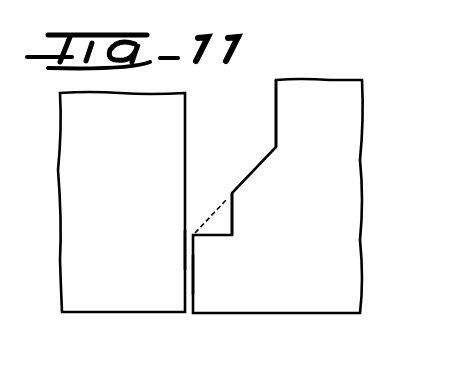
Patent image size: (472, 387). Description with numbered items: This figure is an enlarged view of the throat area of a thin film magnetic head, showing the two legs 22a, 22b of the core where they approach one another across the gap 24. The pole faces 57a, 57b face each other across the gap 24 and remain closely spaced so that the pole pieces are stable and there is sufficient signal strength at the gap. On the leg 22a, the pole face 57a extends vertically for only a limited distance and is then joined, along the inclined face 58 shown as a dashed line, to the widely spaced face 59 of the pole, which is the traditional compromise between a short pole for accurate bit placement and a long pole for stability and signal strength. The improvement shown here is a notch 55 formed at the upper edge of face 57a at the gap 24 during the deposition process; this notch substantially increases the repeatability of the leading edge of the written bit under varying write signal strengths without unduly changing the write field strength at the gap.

The leg of the core 22b is at (128, 143).
The leg of the core 22a is at (352, 141).
The widely spaced face 59 is at (276, 97).
The inclined face 58 is at (218, 207).
The notch 55 is at (229, 224).
The pole face 57b is at (182, 250).
The pole face 57a is at (192, 276).
The gap 24 is at (188, 302).